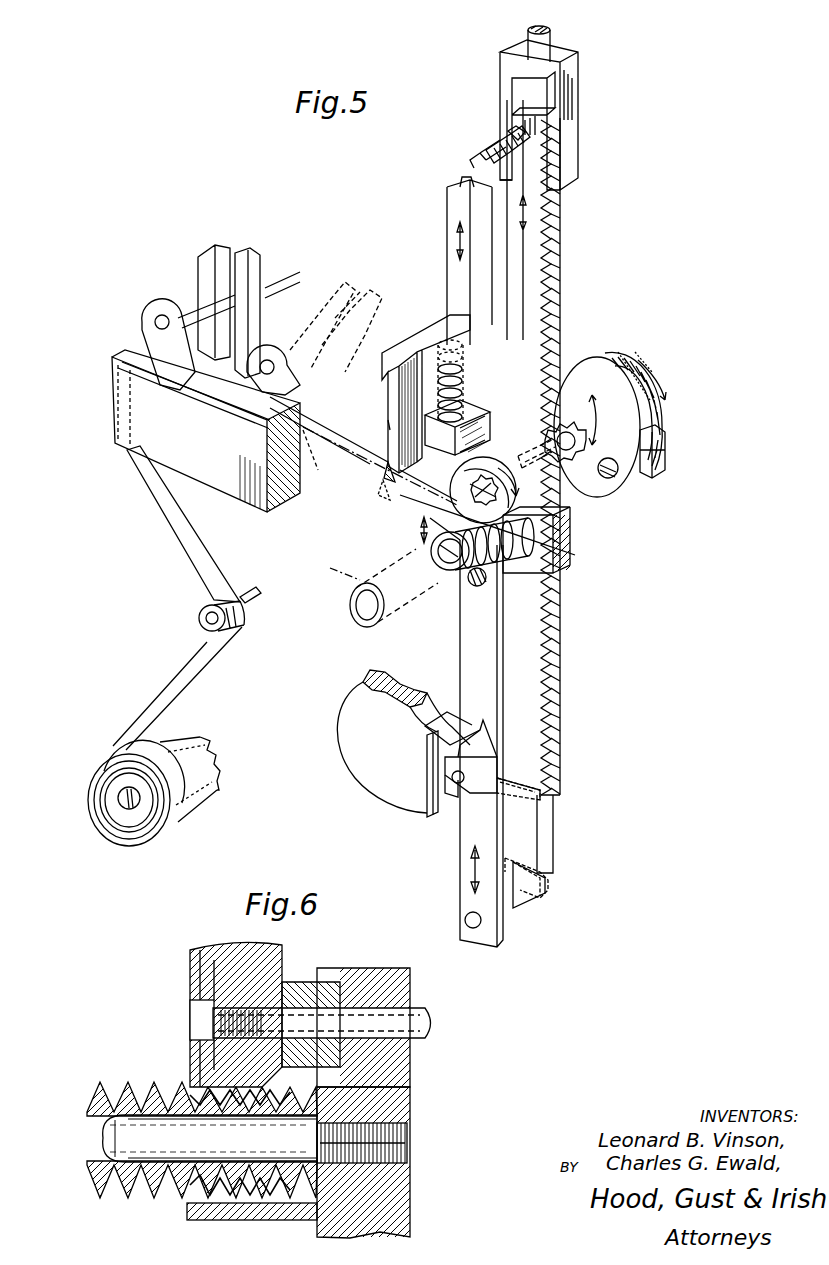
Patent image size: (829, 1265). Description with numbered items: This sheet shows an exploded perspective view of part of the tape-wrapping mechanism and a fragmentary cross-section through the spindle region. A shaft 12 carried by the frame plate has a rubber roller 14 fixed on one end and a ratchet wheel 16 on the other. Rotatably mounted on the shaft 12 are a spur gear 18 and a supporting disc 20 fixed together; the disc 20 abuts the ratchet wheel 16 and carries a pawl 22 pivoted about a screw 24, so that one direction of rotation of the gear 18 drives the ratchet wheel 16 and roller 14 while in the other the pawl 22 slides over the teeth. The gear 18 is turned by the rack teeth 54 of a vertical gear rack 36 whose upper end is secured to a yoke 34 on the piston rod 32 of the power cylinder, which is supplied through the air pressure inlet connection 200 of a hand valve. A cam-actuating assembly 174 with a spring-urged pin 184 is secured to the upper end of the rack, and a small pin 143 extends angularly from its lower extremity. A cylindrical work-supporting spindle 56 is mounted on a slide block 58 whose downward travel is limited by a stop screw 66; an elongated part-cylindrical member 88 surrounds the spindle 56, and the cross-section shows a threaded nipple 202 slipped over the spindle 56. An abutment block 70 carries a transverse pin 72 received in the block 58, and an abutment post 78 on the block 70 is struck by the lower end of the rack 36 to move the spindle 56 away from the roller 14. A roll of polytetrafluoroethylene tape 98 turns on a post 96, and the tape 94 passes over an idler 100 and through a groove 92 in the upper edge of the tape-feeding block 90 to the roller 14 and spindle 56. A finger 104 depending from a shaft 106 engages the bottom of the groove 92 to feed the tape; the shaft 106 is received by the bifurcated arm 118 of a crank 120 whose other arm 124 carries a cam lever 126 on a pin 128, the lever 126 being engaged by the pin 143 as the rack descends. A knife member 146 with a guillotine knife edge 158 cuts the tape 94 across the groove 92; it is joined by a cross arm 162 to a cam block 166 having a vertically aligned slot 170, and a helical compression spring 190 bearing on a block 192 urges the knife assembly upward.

In FIG. 6, the shaft 12 is at (425, 1024).
In FIG. 5, the rubber roller 14 is at (500, 440).
In FIG. 6, the rubber roller 14 is at (205, 952).
In FIG. 5, the ratchet wheel 16 is at (655, 400).
In FIG. 5, the spur gear 18 is at (578, 455).
In FIG. 5, the supporting disc 20 is at (606, 365).
In FIG. 5, the pawl 22 is at (666, 456).
In FIG. 5, the screw 24 is at (616, 478).
In FIG. 5, the piston rod 32 is at (552, 46).
In FIG. 5, the yoke 34 is at (580, 104).
In FIG. 5, the gear rack 36 is at (562, 222).
In FIG. 5, the rack teeth 54 is at (562, 688).
In FIG. 5, the work-supporting spindle 56 is at (455, 556).
In FIG. 6, the work-supporting spindle 56 is at (118, 1138).
In FIG. 6, the slide block 58 is at (393, 1196).
In FIG. 6, the stop screw 66 is at (410, 1140).
In FIG. 5, the abutment block 70 is at (486, 945).
In FIG. 5, the transverse pin 72 is at (477, 588).
In FIG. 5, the abutment post 78 is at (522, 905).
In FIG. 5, the part-cylindrical member 88 is at (525, 560).
In FIG. 6, the part-cylindrical member 88 is at (190, 1220).
In FIG. 5, the tape-feeding block 90 is at (150, 435).
In FIG. 5, the groove 92 is at (240, 405).
In FIG. 5, the plastic tape 94 is at (178, 540).
In FIG. 6, the plastic tape 94 is at (240, 1195).
In FIG. 5, the post 96 is at (205, 800).
In FIG. 5, the roll of polytetrafluoroethylene tape 98 is at (118, 838).
In FIG. 5, the idler 100 is at (199, 623).
In FIG. 5, the finger 104 is at (170, 347).
In FIG. 5, the shaft 106 is at (200, 298).
In FIG. 5, the bifurcated arm 118 is at (262, 322).
In FIG. 5, the crank 120 is at (339, 756).
In FIG. 5, the crank arm 124 is at (416, 805).
In FIG. 5, the cam lever 126 is at (487, 758).
In FIG. 5, the pin 128 is at (456, 782).
In FIG. 5, the small pin 143 is at (512, 792).
In FIG. 5, the knife member 146 is at (387, 423).
In FIG. 5, the guillotine knife edge 158 is at (395, 505).
In FIG. 5, the cross arm 162 is at (412, 340).
In FIG. 5, the cam block 166 is at (446, 229).
In FIG. 5, the slot 170 is at (458, 184).
In FIG. 5, the cam-actuating assembly 174 is at (495, 126).
In FIG. 5, the pin 184 is at (474, 160).
In FIG. 5, the helical compression spring 190 is at (460, 380).
In FIG. 6, the block 192 is at (400, 1072).
In FIG. 5, the air pressure inlet connection 200 is at (436, 546).
In FIG. 5, the nipple 202 is at (345, 576).
In FIG. 6, the nipple 202 is at (102, 1090).